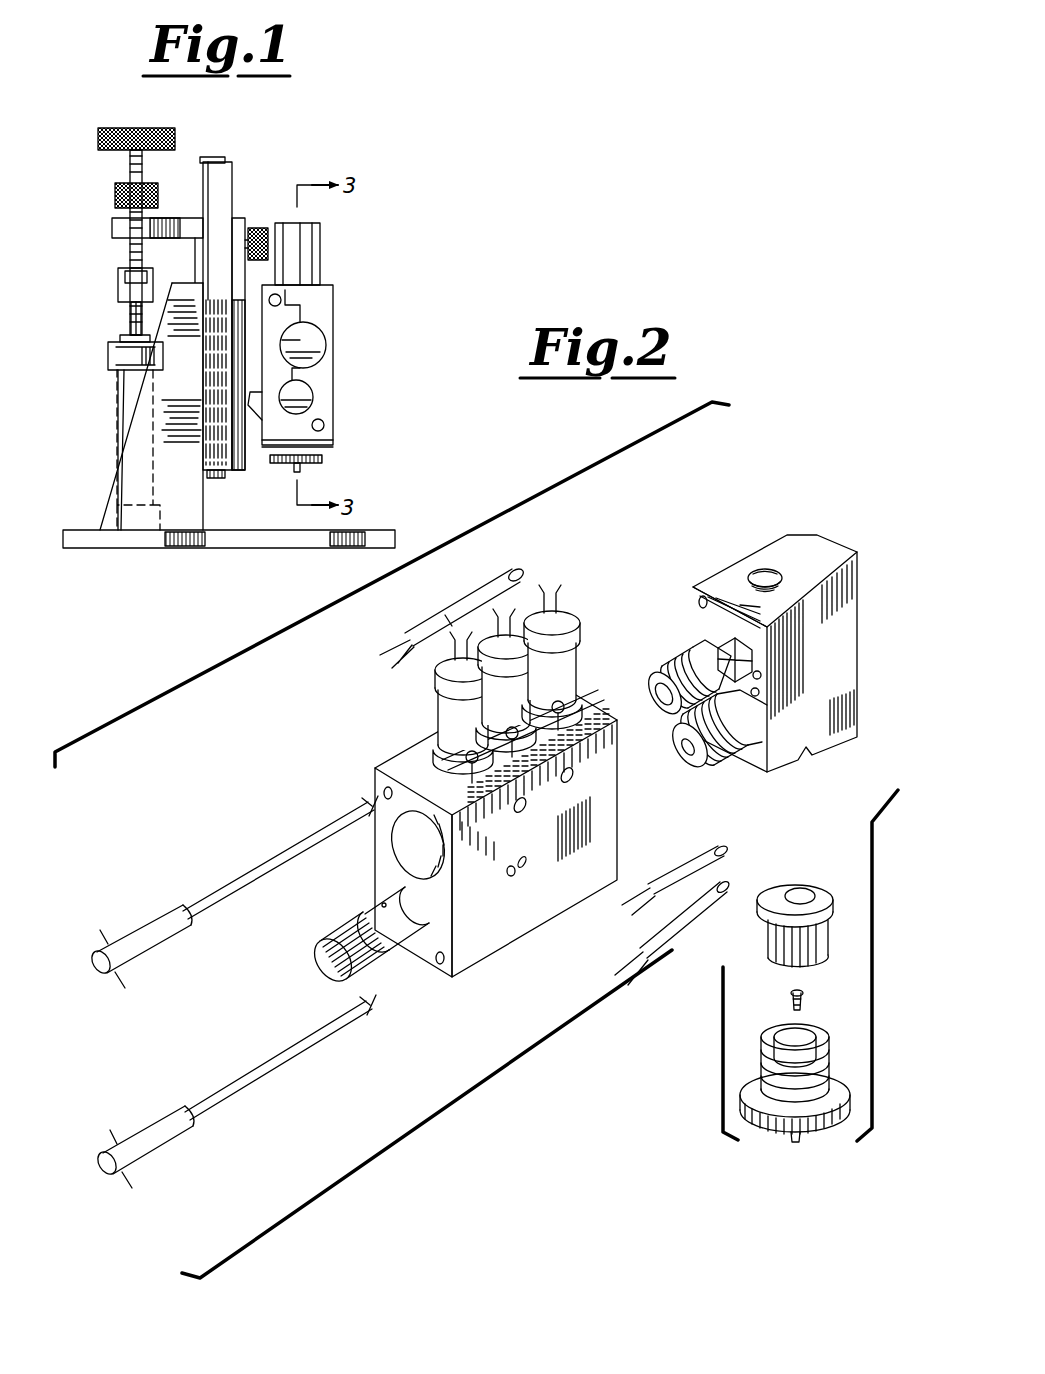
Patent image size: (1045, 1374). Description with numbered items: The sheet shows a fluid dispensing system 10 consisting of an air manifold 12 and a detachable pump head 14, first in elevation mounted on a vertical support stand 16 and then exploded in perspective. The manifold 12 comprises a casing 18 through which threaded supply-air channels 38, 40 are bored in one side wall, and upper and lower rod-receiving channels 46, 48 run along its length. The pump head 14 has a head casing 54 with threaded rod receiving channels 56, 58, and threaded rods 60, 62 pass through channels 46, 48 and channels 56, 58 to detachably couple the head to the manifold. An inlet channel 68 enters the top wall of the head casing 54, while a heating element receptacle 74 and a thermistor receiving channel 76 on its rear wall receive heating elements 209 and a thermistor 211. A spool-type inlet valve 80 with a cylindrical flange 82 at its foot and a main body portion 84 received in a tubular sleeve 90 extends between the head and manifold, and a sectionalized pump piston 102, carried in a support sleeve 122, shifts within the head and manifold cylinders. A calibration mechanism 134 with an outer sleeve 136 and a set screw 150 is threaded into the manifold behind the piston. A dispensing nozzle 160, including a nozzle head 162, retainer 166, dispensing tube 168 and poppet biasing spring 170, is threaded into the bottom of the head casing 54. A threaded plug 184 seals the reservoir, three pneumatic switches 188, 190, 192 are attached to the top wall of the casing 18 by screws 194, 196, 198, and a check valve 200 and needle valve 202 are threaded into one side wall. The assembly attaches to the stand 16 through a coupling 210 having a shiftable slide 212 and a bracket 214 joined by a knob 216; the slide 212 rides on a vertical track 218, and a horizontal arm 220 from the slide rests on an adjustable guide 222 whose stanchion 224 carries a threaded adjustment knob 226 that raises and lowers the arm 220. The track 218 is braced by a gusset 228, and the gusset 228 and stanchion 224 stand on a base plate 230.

In FIG. 1, the fluid dispensing system 10 is at (360, 278).
In FIG. 2, the fluid dispensing system 10 is at (655, 565).
In FIG. 1, the air manifold 12 is at (345, 333).
In FIG. 2, the air manifold 12 is at (510, 965).
In FIG. 1, the pump head 14 is at (340, 462).
In FIG. 2, the pump head 14 is at (815, 530).
In FIG. 1, the support stand 16 is at (110, 275).
In FIG. 2, the casing 18 is at (395, 758).
In FIG. 2, the supply-air channel 38 is at (555, 855).
In FIG. 2, the supply-air channel 40 is at (570, 782).
In FIG. 2, the rod-receiving channel 46 is at (385, 793).
In FIG. 2, the rod-receiving channel 48 is at (440, 965).
In FIG. 2, the head casing 54 is at (860, 610).
In FIG. 2, the rod receiving channel 56 is at (699, 602).
In FIG. 2, the rod receiving channel 58 is at (752, 770).
In FIG. 2, the threaded rod 60 is at (226, 886).
In FIG. 2, the threaded rod 62 is at (250, 1086).
In FIG. 2, the inlet channel 68 is at (766, 569).
In FIG. 2, the heating element receptacle 74 is at (760, 694).
In FIG. 2, the thermistor receiving channel 76 is at (716, 646).
In FIG. 2, the inlet valve 80 is at (648, 680).
In FIG. 2, the cylindrical flange 82 is at (688, 724).
In FIG. 2, the main body portion 84 is at (726, 648).
In FIG. 2, the sleeve 90 is at (690, 660).
In FIG. 2, the pump piston 102 is at (628, 824).
In FIG. 2, the support sleeve 122 is at (756, 742).
In FIG. 1, the calibration mechanism 134 is at (308, 395).
In FIG. 2, the calibration mechanism 134 is at (312, 958).
In FIG. 2, the outer sleeve 136 is at (372, 913).
In FIG. 2, the set screw 150 is at (382, 902).
In FIG. 1, the dispensing nozzle 160 is at (292, 472).
In FIG. 2, the dispensing nozzle 160 is at (771, 1119).
In FIG. 2, the nozzle head 162 is at (757, 1120).
In FIG. 2, the retainer 166 is at (775, 960).
In FIG. 2, the dispensing tube 168 is at (797, 1140).
In FIG. 2, the poppet biasing spring 170 is at (790, 1008).
In FIG. 1, the threaded plug 184 is at (320, 350).
In FIG. 2, the threaded plug 184 is at (395, 843).
In FIG. 2, the pneumatic switch 188 is at (555, 626).
In FIG. 2, the pneumatic switch 190 is at (510, 646).
In FIG. 2, the pneumatic switch 192 is at (435, 703).
In FIG. 2, the screw 194 is at (522, 812).
In FIG. 2, the screw 196 is at (525, 812).
In FIG. 2, the screw 198 is at (565, 725).
In FIG. 2, the check valve 200 is at (523, 870).
In FIG. 2, the needle valve 202 is at (511, 878).
In FIG. 2, the heating element 209 is at (488, 585).
In FIG. 2, the thermistor 211 is at (722, 860).
In FIG. 1, the coupling 210 is at (238, 168).
In FIG. 1, the slide 212 is at (222, 165).
In FIG. 1, the bracket 214 is at (238, 225).
In FIG. 1, the knob 216 is at (270, 242).
In FIG. 1, the track 218 is at (195, 250).
In FIG. 1, the arm 220 is at (178, 218).
In FIG. 1, the adjustable guide 222 is at (95, 130).
In FIG. 1, the stanchion 224 is at (118, 420).
In FIG. 1, the threaded adjustment knob 226 is at (140, 128).
In FIG. 1, the gusset 228 is at (128, 465).
In FIG. 1, the base plate 230 is at (250, 548).